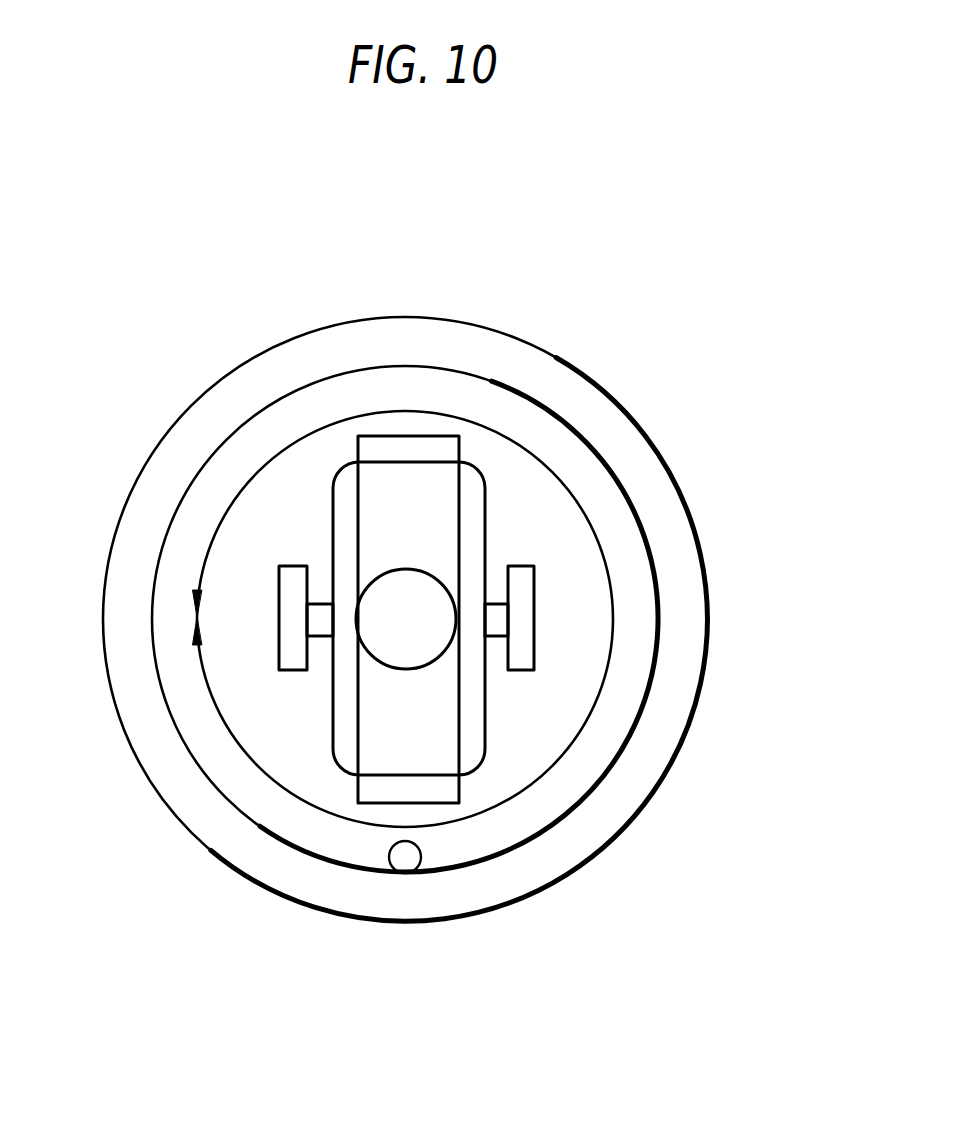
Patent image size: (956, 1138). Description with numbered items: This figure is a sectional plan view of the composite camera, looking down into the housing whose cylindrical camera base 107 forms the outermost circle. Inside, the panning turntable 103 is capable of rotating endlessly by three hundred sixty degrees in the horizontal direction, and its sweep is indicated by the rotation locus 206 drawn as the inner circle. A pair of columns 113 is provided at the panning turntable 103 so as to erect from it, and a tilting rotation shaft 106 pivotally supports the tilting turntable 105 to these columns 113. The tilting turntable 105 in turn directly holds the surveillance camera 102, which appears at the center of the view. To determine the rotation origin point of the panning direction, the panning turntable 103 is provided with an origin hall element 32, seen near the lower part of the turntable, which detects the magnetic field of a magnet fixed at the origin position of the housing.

The tilting turntable 105 is at (397, 463).
The surveillance camera 102 is at (438, 577).
The tilting rotation shaft 106 is at (495, 605).
The columns 113 is at (278, 585).
The rotation locus 206 is at (602, 707).
The panning turntable 103 is at (560, 827).
The camera base 107 is at (230, 868).
The origin hall element 32 is at (405, 860).